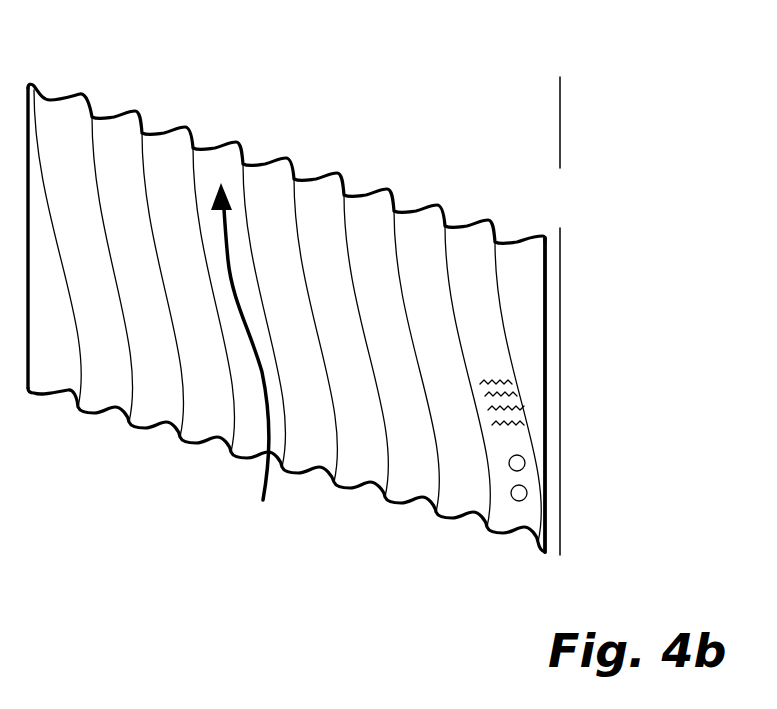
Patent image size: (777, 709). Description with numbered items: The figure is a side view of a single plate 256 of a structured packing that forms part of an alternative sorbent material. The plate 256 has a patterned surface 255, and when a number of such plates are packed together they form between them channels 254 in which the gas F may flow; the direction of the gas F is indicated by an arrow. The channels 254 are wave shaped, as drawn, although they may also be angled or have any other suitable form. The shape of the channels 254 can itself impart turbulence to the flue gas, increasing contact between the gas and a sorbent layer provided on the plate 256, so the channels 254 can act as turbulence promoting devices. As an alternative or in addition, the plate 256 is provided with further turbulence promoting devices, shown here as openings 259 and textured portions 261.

The channels 254 is at (120, 137).
The patterned surface 255 is at (487, 307).
The plate 256 is at (441, 196).
The openings 259 is at (527, 488).
The textured portions 261 is at (513, 400).
The gas F is at (265, 485).